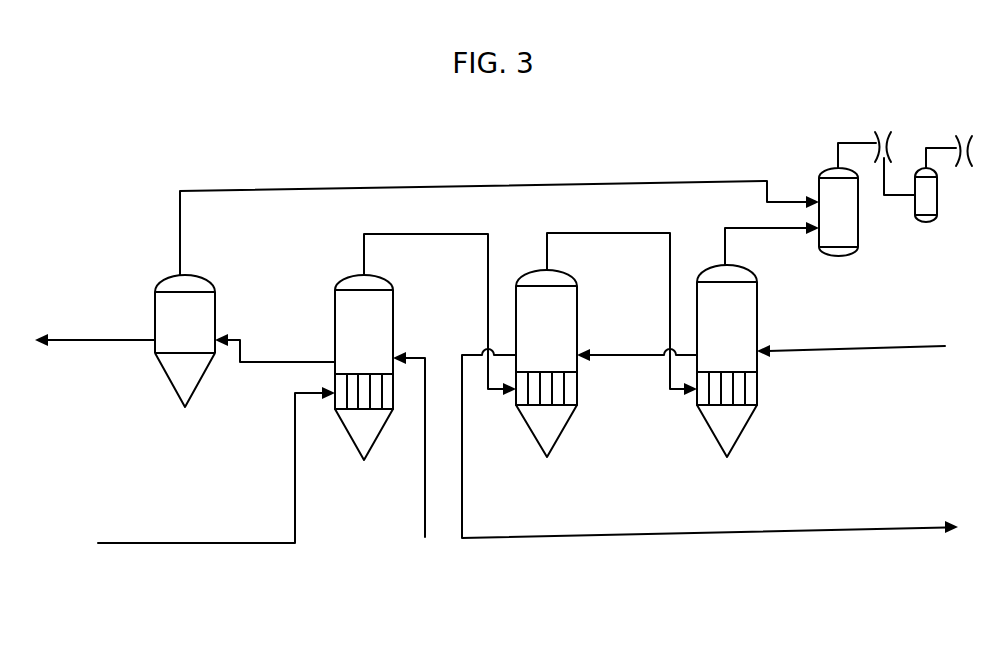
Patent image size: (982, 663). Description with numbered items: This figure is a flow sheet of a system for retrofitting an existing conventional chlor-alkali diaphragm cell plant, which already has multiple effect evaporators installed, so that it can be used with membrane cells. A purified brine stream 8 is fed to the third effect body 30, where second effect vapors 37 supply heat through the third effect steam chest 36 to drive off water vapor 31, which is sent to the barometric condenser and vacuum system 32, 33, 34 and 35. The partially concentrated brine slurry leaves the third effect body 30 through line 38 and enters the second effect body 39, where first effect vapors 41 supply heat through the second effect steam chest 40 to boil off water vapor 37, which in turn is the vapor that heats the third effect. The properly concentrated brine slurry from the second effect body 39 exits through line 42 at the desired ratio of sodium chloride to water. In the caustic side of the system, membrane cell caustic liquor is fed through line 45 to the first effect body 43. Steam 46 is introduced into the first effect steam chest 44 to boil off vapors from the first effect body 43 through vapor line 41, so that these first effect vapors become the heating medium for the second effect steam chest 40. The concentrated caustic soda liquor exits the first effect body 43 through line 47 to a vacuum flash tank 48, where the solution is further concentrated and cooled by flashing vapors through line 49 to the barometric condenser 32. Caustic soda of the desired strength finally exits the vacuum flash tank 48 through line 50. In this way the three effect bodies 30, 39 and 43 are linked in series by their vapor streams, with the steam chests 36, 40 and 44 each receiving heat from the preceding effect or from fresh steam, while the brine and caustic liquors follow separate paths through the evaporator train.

The purified brine stream 8 is at (851, 342).
The third effect body 30 is at (743, 361).
The water vapor 31 is at (772, 243).
The barometric condenser 32 is at (847, 199).
The vacuum system 33 is at (891, 152).
The vacuum system 34 is at (939, 185).
The vacuum system 35 is at (960, 140).
The third effect steam chest 36 is at (758, 390).
The second effect vapors 37 is at (622, 302).
The line 38 is at (637, 346).
The second effect body 39 is at (560, 363).
The second effect steam chest 40 is at (578, 395).
The first effect vapors 41 is at (440, 304).
The line 42 is at (710, 443).
The first effect body 43 is at (377, 367).
The first effect steam chest 44 is at (397, 398).
The line 45 is at (409, 444).
The steam 46 is at (216, 465).
The line 47 is at (275, 348).
The vacuum flash tank 48 is at (185, 341).
The line 49 is at (499, 221).
The line 50 is at (95, 333).